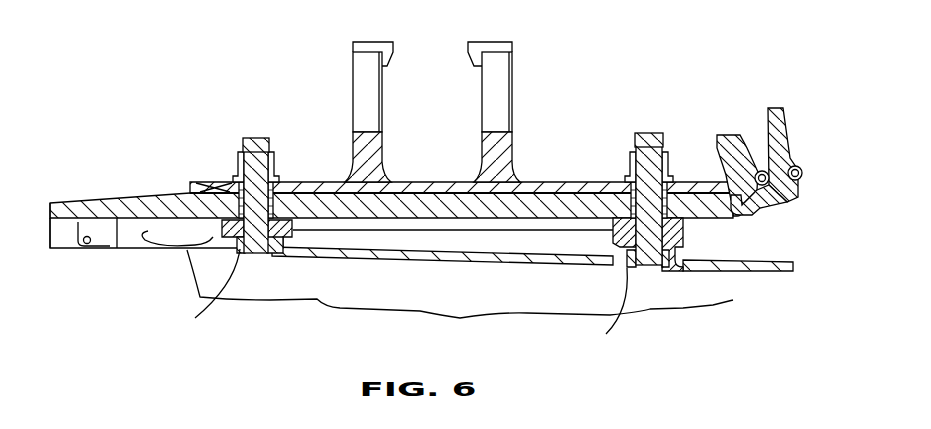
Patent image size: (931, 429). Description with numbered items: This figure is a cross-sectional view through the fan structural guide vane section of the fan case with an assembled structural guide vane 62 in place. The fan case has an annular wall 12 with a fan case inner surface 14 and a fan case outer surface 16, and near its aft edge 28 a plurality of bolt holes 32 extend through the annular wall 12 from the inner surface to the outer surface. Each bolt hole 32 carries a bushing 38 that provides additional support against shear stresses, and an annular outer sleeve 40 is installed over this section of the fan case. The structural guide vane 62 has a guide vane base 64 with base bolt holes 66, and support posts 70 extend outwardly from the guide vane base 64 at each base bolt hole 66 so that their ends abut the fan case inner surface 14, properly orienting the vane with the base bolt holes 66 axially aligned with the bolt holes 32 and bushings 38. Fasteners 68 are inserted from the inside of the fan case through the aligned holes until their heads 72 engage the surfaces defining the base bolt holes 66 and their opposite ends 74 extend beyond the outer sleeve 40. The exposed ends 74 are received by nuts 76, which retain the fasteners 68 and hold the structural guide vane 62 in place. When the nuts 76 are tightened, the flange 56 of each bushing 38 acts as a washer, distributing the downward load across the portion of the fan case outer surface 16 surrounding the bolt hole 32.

The annular wall 12 is at (130, 196).
The fan case inner surface 14 is at (117, 248).
The fan case outer surface 16 is at (80, 200).
The aft edge 28 is at (797, 165).
The bolt holes 32 is at (222, 185).
The bushing 38 is at (287, 192).
The outer sleeve 40 is at (524, 182).
The flange 56 is at (240, 188).
The structural guide vane 62 is at (713, 287).
The guide vane base 64 is at (737, 300).
The base bolt holes 66 is at (401, 300).
The fastener 68 is at (253, 150).
The support posts 70 is at (225, 222).
The heads 72 is at (250, 257).
The opposite ends 74 is at (262, 138).
The nuts 76 is at (273, 158).